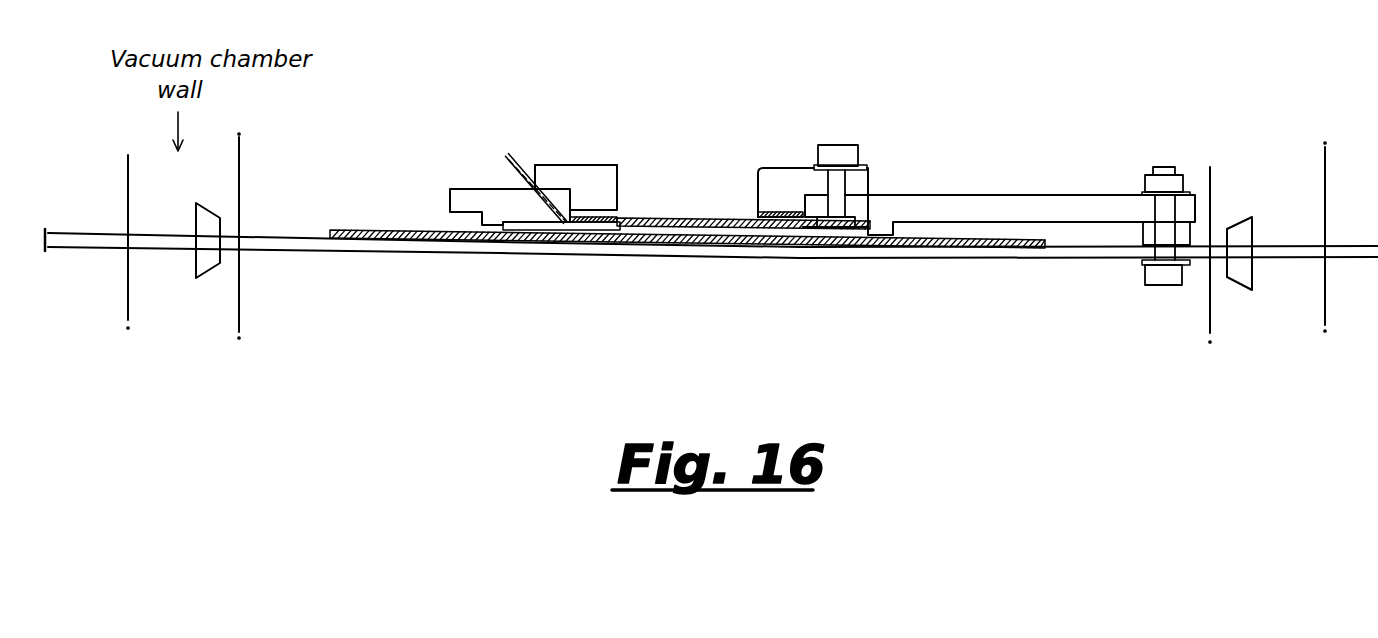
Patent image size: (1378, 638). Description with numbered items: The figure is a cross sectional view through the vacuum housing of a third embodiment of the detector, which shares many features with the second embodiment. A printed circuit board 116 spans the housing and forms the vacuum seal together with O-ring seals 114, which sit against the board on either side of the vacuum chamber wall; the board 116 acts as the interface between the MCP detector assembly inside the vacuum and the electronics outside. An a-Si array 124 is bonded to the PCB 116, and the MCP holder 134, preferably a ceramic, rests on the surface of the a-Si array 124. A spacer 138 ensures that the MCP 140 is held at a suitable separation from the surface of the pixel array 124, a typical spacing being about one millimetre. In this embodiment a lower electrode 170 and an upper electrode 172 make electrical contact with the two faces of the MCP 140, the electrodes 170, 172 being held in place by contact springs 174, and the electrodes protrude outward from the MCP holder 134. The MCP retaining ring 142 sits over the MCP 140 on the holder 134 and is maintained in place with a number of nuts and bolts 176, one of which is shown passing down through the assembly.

The O-ring seals 114 is at (207, 278).
The printed circuit board 116 is at (1350, 246).
The a-Si array 124 is at (1015, 238).
The MCP holder 134 is at (561, 166).
The spacer 138 is at (575, 230).
The MCP 140 is at (735, 222).
The MCP retaining ring 142 is at (597, 193).
The lower electrode 170 is at (530, 176).
The upper electrode 172 is at (510, 158).
The contact springs 174 is at (615, 216).
The nuts and bolts 176 is at (836, 156).